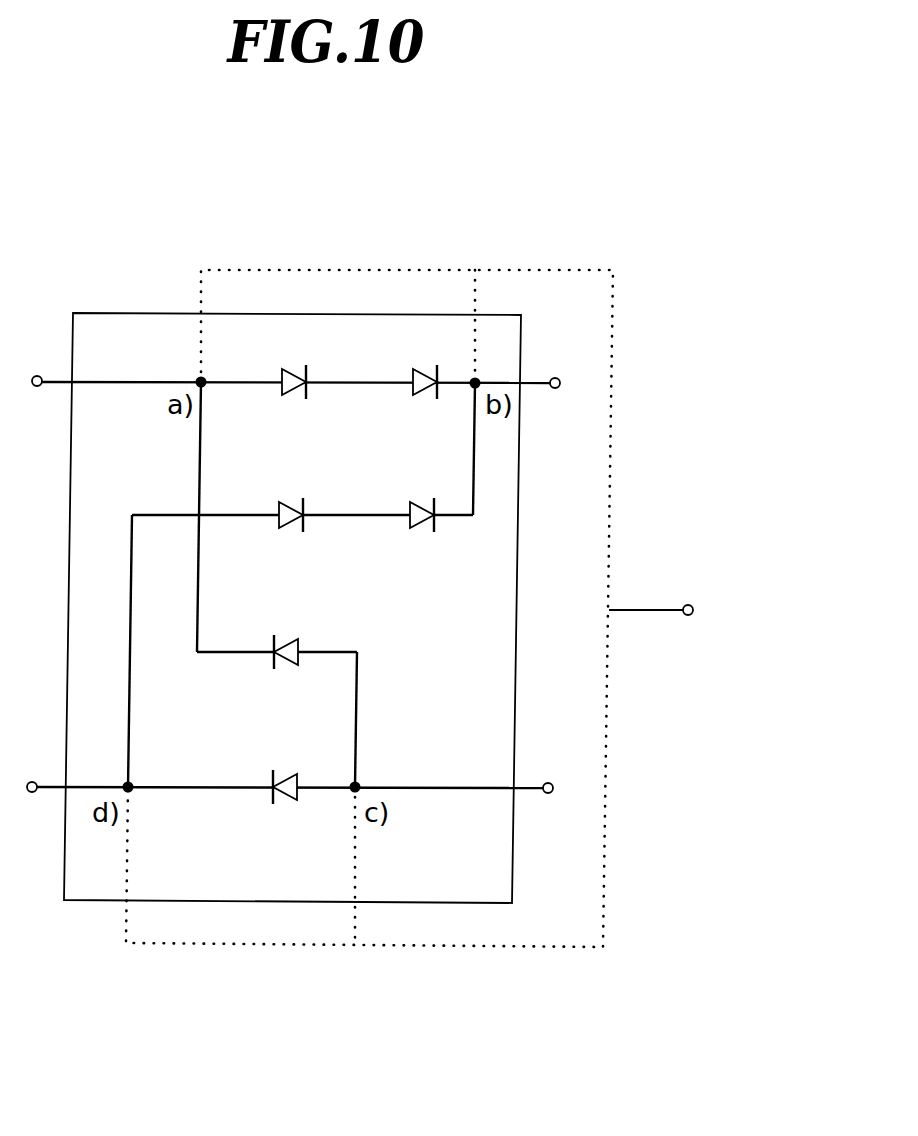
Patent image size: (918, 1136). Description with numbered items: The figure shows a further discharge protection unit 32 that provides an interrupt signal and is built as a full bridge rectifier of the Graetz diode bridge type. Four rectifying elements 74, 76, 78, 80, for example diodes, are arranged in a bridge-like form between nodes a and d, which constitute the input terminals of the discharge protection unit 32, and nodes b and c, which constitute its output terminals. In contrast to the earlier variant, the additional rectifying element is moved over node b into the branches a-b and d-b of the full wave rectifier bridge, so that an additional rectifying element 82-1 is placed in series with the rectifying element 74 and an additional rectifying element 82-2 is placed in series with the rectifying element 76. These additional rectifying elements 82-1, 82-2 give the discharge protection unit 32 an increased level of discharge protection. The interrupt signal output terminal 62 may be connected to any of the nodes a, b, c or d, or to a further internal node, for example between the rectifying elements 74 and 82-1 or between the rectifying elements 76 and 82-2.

The discharge protection unit 32 is at (80, 313).
The rectifying element 74 is at (297, 390).
The rectifying element 76 is at (294, 523).
The rectifying element 78 is at (282, 660).
The rectifying element 80 is at (281, 795).
The additional rectifying element 82-1 is at (428, 390).
The additional rectifying element 82-2 is at (425, 523).
The interrupt signal output terminal 62 is at (702, 612).